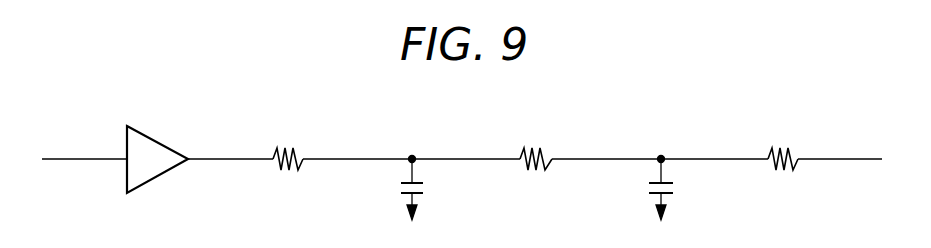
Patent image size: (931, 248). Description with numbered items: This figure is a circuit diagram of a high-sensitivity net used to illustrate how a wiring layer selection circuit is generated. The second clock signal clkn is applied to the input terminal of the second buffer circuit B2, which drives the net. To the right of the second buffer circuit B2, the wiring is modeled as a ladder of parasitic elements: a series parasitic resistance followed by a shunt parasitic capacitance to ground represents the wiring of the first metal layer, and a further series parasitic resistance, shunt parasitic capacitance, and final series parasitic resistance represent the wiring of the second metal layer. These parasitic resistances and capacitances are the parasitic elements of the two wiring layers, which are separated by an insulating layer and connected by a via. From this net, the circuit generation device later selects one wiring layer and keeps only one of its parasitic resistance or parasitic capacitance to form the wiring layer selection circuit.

The second clock signal clkn is at (83, 145).
The second buffer circuit B2 is at (153, 139).